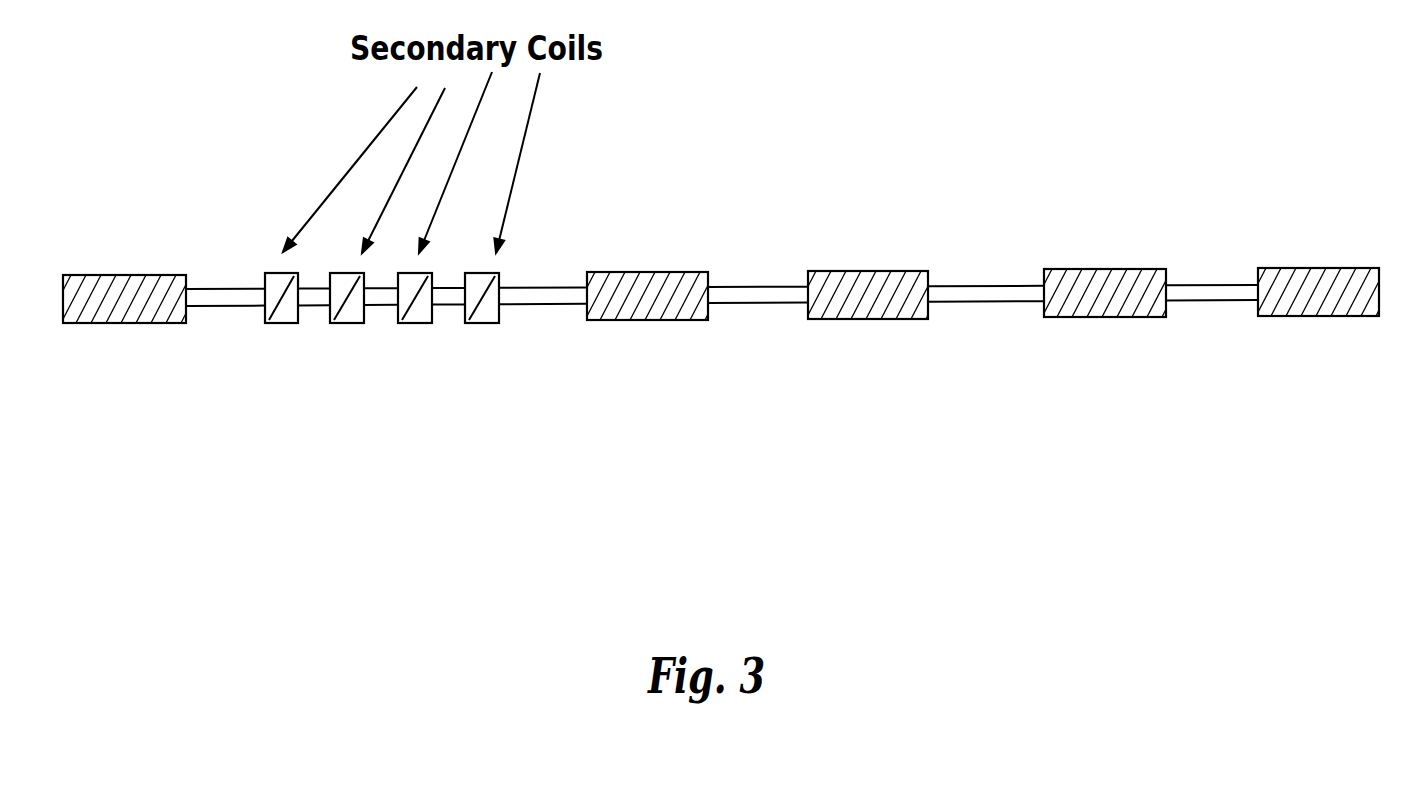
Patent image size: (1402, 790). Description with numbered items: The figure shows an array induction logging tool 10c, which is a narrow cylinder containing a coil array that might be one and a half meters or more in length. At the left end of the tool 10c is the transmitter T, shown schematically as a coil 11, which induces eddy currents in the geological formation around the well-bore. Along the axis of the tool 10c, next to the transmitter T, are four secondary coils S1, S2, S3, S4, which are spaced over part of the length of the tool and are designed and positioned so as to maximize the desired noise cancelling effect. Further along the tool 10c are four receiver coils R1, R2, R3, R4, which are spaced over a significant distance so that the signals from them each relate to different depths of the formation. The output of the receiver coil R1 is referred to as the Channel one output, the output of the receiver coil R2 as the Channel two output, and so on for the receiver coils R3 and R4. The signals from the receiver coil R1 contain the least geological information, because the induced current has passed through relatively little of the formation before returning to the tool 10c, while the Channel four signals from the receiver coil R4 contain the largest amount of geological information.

The coil 11 is at (126, 293).
The array tool 10c is at (765, 297).
The transmitter T is at (126, 337).
The secondary coil S1 is at (280, 327).
The secondary coil S2 is at (347, 327).
The secondary coil S3 is at (417, 327).
The secondary coil S4 is at (482, 327).
The receiver coil R1 is at (655, 320).
The receiver coil R2 is at (875, 320).
The receiver coil R3 is at (1110, 317).
The receiver coil R4 is at (1327, 316).